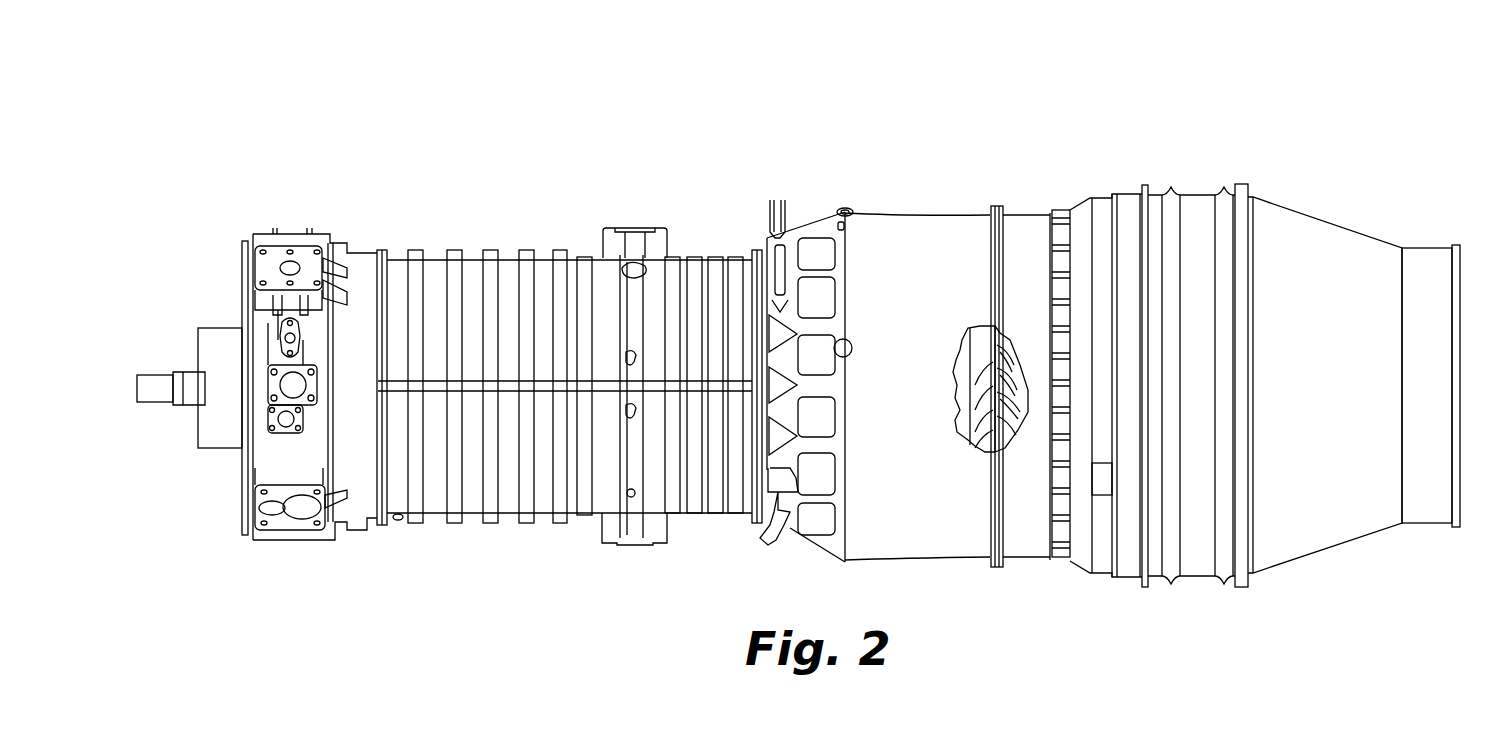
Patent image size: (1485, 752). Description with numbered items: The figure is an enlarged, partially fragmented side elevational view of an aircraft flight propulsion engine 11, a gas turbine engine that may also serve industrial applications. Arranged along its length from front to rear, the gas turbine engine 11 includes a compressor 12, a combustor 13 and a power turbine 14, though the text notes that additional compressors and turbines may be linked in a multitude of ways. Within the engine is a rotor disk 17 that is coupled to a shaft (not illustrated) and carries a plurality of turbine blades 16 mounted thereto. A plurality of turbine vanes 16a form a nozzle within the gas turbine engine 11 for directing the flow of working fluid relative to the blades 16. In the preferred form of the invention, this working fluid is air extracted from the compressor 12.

The aircraft flight propulsion engine 11 is at (1368, 116).
The compressor 12 is at (472, 517).
The combustor 13 is at (923, 212).
The power turbine 14 is at (1203, 195).
The turbine blades 16 is at (1010, 330).
The turbine vanes 16a is at (963, 443).
The rotor disk 17 is at (1010, 443).